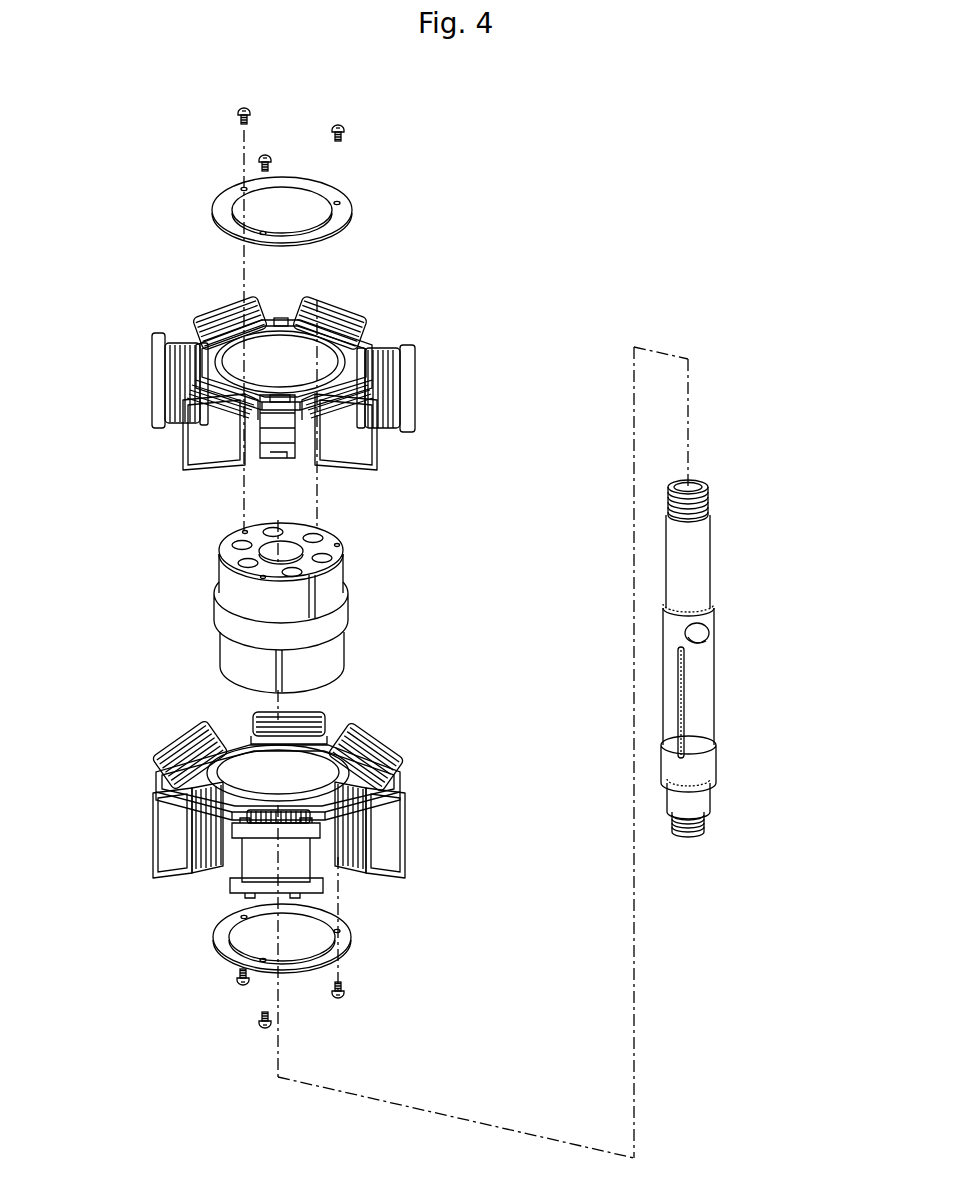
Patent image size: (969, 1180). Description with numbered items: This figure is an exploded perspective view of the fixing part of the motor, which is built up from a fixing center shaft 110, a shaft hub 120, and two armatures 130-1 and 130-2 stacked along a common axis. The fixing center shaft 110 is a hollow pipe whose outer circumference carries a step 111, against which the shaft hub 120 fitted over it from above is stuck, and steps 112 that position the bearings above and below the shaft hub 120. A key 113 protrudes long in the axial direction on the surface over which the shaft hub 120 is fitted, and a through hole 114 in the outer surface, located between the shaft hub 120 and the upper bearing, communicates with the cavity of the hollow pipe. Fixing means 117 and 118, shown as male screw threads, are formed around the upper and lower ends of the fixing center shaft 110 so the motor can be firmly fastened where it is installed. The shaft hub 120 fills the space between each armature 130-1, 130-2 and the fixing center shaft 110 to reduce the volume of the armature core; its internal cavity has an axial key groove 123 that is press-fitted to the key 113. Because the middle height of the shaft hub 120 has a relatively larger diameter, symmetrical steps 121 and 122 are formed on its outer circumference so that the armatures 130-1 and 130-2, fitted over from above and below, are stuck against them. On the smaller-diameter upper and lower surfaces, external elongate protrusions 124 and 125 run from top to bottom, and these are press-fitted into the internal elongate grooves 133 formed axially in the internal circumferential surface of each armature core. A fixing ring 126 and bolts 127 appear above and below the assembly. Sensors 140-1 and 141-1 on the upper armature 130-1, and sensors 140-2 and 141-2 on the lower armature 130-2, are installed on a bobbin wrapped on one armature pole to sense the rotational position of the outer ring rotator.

The fixing center shaft 110 is at (740, 565).
The step 111 is at (716, 750).
The step 112 is at (716, 608).
The key 113 is at (681, 706).
The through hole 114 is at (705, 633).
The fixing means 117 is at (708, 502).
The fixing means 118 is at (706, 825).
The shaft hub 120 is at (375, 615).
The step 121 is at (218, 607).
The step 122 is at (222, 636).
The key groove 123 is at (267, 576).
The external elongate protrusion 124 is at (312, 590).
The external elongate protrusion 125 is at (277, 678).
The fixing ring 126 is at (352, 210).
The bolt 127 is at (345, 132).
The armature 130-1 is at (435, 402).
The armature 130-2 is at (437, 818).
The internal elongate groove 133 is at (320, 340).
The sensor 140-1 is at (153, 370).
The sensor 141-1 is at (158, 333).
The sensor 140-2 is at (303, 838).
The sensor 141-2 is at (242, 843).